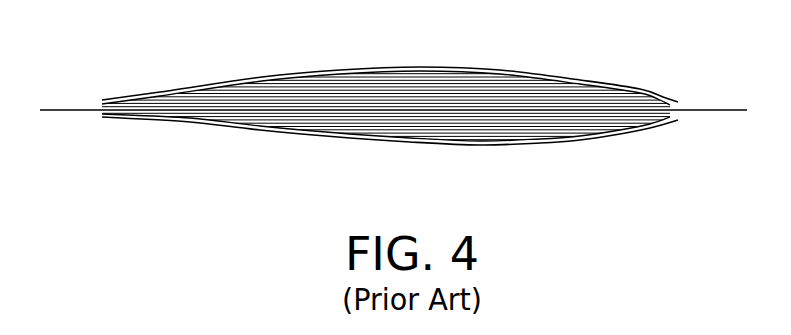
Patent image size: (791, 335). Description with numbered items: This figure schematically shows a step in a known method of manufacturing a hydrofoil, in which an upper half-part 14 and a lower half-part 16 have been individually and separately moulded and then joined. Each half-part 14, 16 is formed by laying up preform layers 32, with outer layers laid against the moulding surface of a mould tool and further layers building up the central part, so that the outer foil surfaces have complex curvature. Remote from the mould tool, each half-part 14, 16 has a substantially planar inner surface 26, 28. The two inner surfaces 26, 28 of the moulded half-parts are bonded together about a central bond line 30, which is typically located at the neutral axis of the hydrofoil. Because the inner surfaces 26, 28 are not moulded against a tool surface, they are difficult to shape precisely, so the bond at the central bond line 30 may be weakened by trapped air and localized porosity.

The upper half-part 14 is at (262, 77).
The lower half-part 16 is at (263, 130).
The inner surface 26 is at (372, 103).
The inner surface 28 is at (370, 115).
The central bond line 30 is at (702, 108).
The preform layers 32 is at (483, 82).